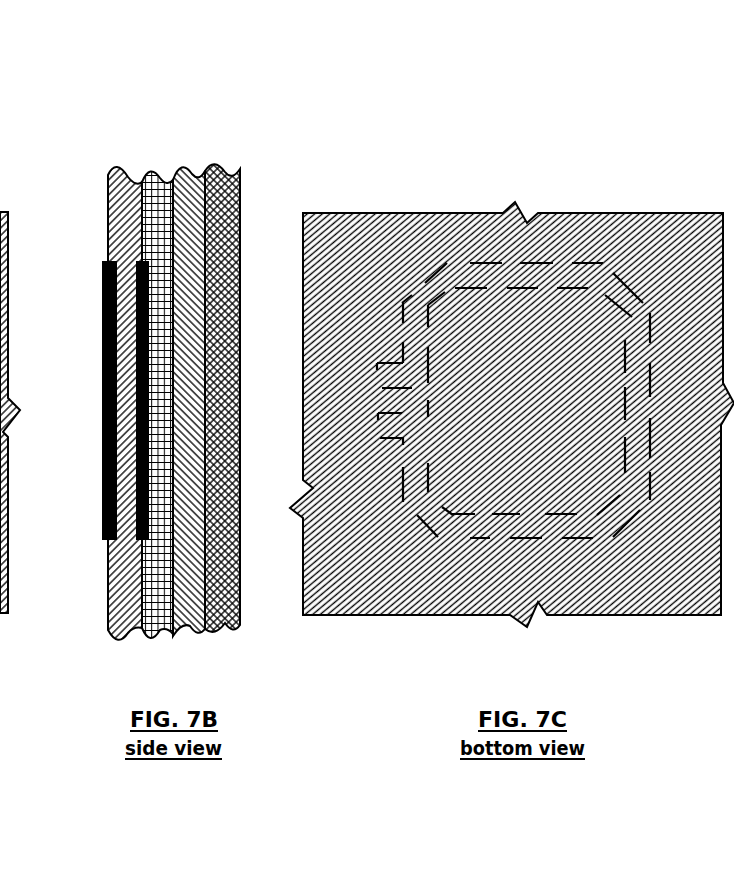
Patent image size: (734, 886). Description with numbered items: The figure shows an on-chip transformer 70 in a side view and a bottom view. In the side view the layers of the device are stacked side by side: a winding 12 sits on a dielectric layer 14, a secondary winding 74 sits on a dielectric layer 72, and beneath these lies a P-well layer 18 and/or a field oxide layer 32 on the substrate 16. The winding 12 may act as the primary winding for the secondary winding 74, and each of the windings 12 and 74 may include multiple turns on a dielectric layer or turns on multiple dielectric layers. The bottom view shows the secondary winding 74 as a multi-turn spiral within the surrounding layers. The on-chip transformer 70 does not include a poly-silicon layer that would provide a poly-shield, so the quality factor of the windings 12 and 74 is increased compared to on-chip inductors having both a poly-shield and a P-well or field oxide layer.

In FIG. 7B, the on-chip transformer 70 is at (252, 406).
In FIG. 7B, the winding 12 is at (92, 437).
In FIG. 7B, the dielectric layer 14 is at (77, 177).
In FIG. 7B, the substrate 16 is at (222, 134).
In FIG. 7B, the P-well layer 18 is at (334, 343).
In FIG. 7B, the field oxide layer 32 is at (189, 401).
In FIG. 7B, the dielectric layer 72 is at (158, 152).
In FIG. 7B, the secondary winding 74 is at (130, 553).
In FIG. 7C, the secondary winding 74 is at (465, 541).